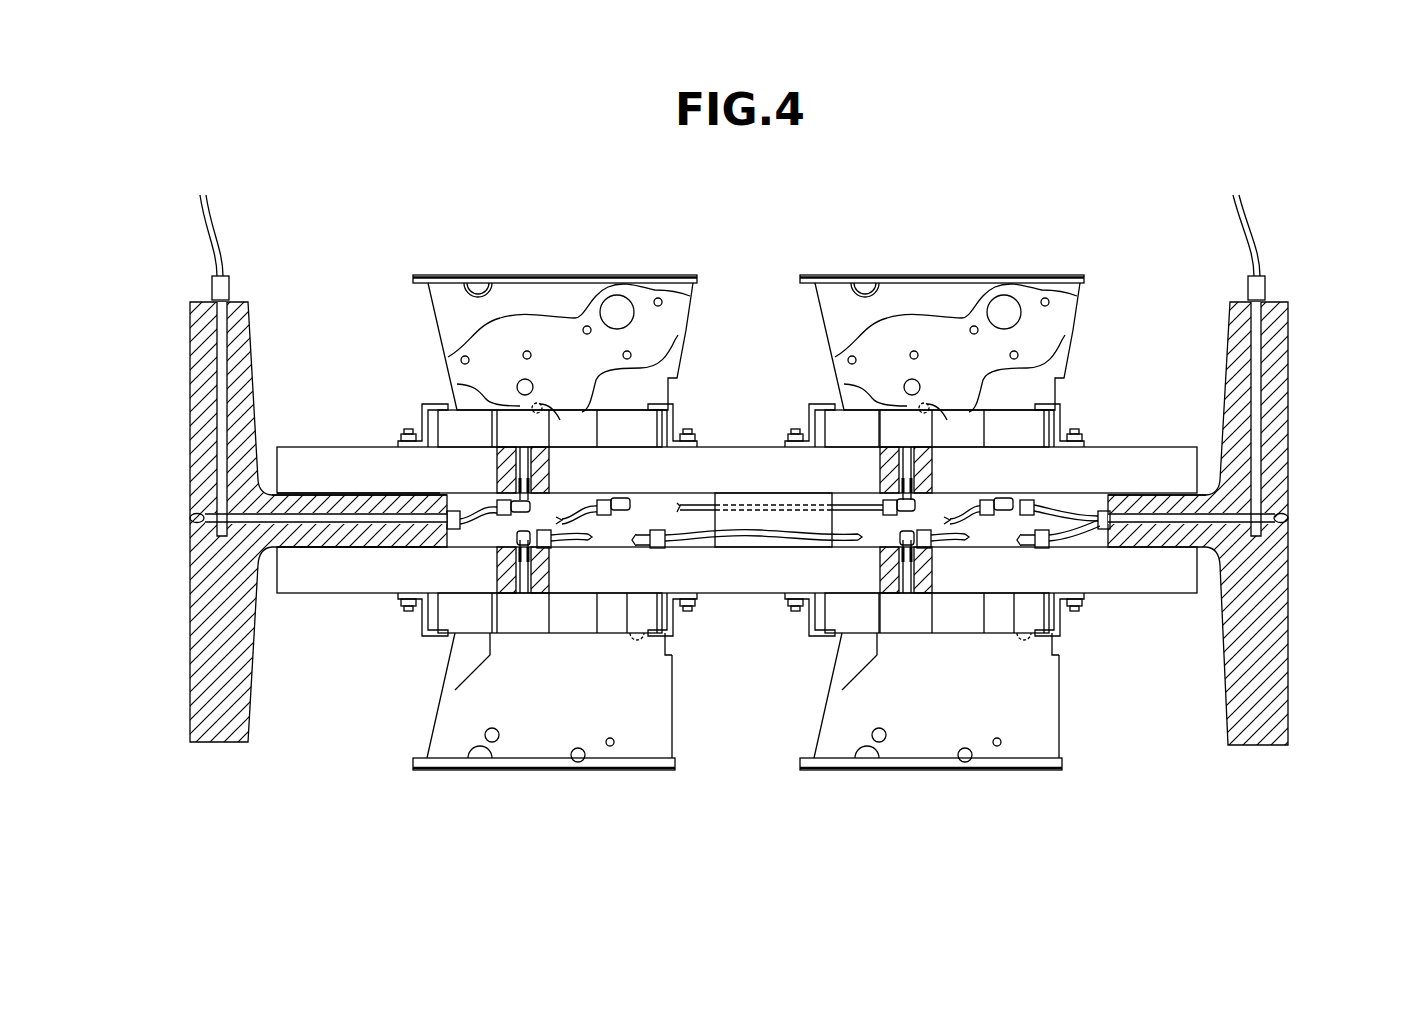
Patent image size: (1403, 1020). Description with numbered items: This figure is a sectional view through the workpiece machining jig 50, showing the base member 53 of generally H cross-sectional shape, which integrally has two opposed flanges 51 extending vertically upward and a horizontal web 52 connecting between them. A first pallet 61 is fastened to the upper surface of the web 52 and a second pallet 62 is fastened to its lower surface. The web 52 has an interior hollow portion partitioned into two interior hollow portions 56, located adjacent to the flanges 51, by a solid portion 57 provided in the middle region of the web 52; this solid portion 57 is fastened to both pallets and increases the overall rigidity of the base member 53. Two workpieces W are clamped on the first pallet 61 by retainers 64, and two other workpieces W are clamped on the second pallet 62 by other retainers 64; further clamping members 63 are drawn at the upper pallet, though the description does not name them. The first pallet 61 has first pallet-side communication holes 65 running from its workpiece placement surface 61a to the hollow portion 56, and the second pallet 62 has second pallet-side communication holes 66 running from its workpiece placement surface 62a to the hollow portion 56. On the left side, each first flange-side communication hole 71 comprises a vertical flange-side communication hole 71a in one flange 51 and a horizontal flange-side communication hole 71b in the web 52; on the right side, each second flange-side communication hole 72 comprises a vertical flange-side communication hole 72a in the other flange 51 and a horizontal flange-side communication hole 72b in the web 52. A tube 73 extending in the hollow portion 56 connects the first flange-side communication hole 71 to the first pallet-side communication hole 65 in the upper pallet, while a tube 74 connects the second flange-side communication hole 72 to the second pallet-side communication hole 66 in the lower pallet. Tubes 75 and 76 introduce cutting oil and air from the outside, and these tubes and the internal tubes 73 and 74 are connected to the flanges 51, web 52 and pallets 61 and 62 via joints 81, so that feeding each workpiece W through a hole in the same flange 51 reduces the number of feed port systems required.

The workpiece machining jig 50 is at (344, 160).
The flange 51 is at (252, 333).
The horizontal web 52 is at (313, 497).
The base member 53 is at (268, 236).
The interior hollow portion 56 is at (436, 640).
The solid portion 57 is at (780, 497).
The first pallet 61 is at (733, 447).
The workpiece placement surface 61a is at (350, 447).
The second pallet 62 is at (740, 597).
The workpiece placement surface 62a is at (355, 597).
The upper bracket 63 is at (422, 441).
The retainer 64 is at (410, 636).
The first pallet-side communication hole 65 is at (523, 450).
The second pallet-side communication hole 66 is at (522, 593).
The first flange-side communication hole 71 is at (271, 447).
The vertical flange-side communication hole 71a is at (183, 419).
The horizontal flange-side communication hole 71b is at (250, 523).
The second flange-side communication hole 72 is at (1243, 447).
The vertical flange-side communication hole 72a is at (1293, 419).
The horizontal flange-side communication hole 72b is at (1250, 523).
The tube 73 is at (480, 512).
The tube 74 is at (572, 538).
The tube 75 is at (213, 235).
The tube 76 is at (1262, 222).
The connector 81 is at (1265, 288).
The workpiece W is at (540, 275).